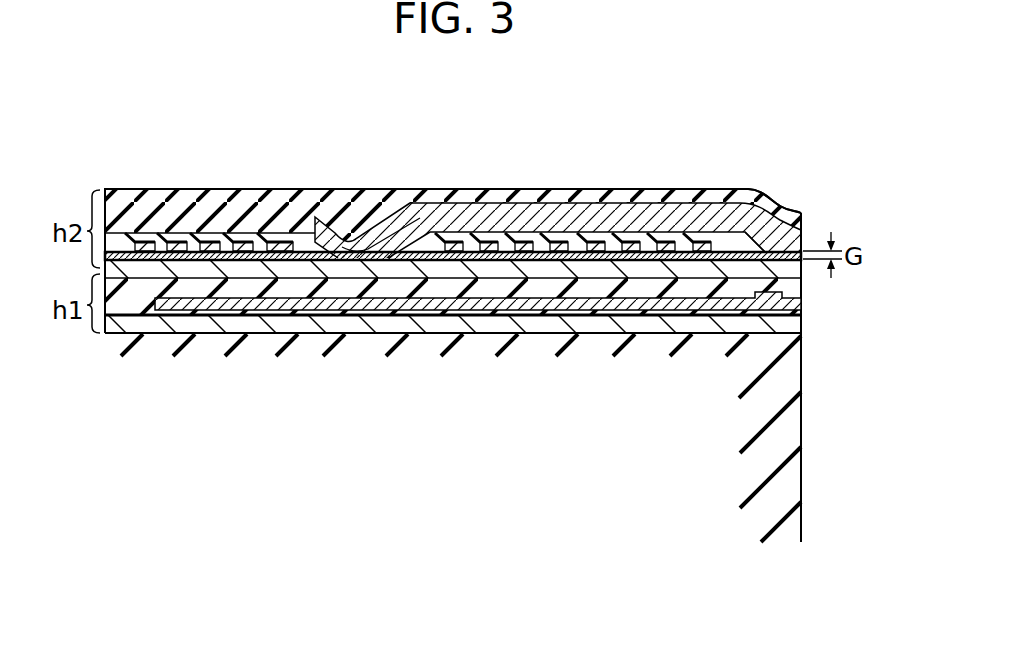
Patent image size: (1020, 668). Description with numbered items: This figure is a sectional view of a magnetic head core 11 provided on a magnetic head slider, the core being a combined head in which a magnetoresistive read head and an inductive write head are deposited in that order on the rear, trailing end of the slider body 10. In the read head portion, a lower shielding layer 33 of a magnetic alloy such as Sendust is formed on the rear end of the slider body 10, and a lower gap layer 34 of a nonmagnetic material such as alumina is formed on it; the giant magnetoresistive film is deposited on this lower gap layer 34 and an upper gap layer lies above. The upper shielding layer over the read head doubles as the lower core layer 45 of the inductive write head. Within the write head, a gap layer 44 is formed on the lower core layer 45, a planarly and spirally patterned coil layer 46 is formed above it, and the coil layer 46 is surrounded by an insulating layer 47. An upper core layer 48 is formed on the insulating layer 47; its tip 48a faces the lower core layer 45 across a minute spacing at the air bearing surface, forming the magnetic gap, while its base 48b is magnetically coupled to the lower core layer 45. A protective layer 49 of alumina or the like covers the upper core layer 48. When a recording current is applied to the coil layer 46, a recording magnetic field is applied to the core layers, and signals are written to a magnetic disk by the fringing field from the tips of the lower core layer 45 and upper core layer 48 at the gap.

The slider body 10 is at (793, 425).
The magnetic head core 11 is at (50, 213).
The lower shielding layer 33 is at (802, 321).
The lower gap layer 34 is at (802, 308).
The gap layer 44 is at (731, 250).
The lower core layer 45 is at (802, 262).
The coil layer 46 is at (206, 245).
The insulating layer 47 is at (126, 236).
The upper core layer 48 is at (468, 220).
The tip 48a is at (803, 229).
The base 48b is at (366, 252).
The protective layer 49 is at (289, 216).